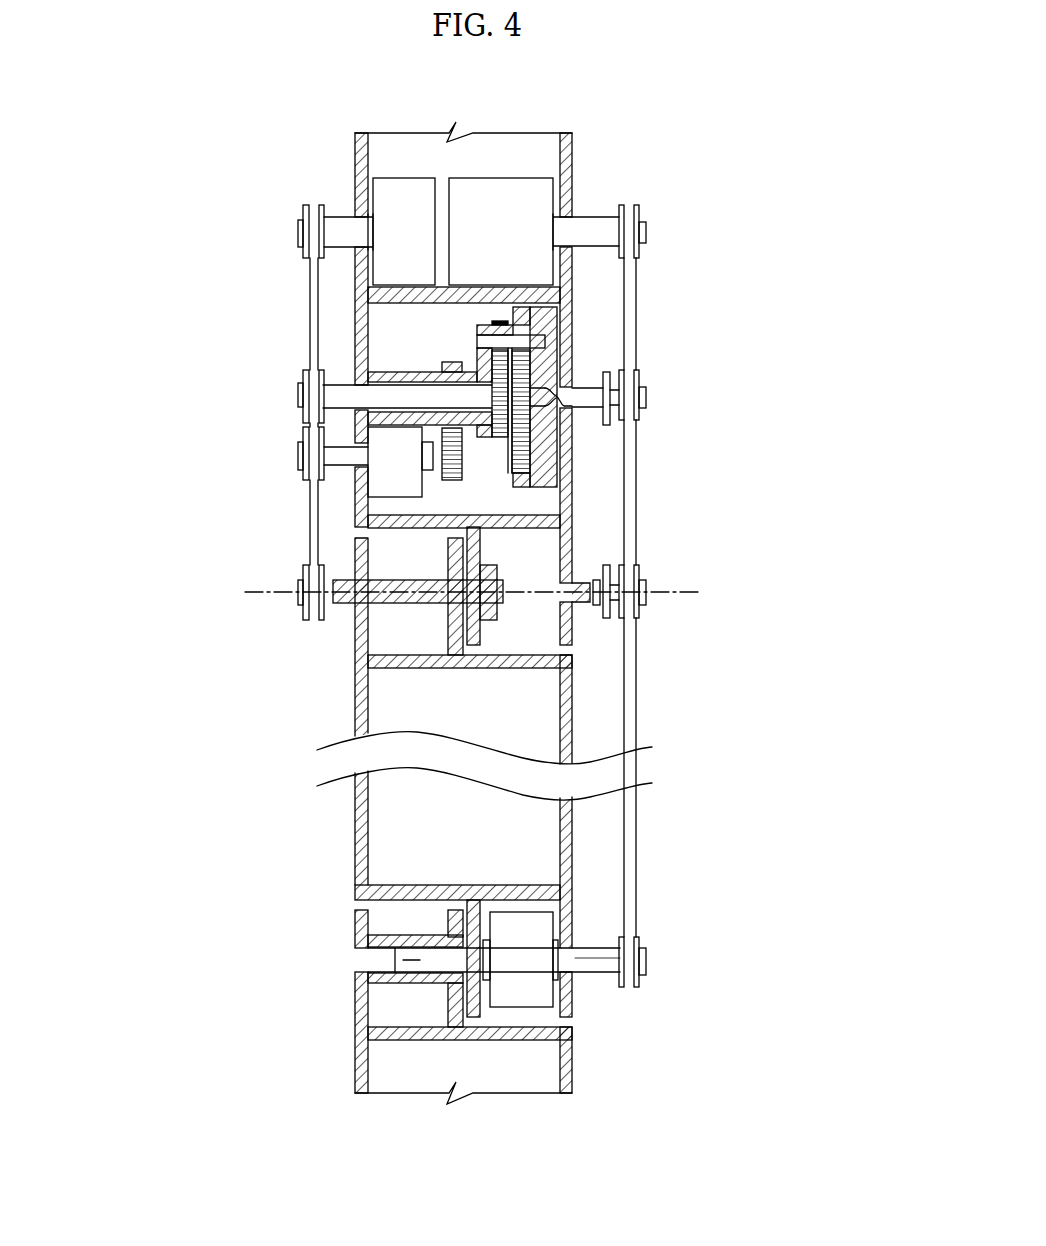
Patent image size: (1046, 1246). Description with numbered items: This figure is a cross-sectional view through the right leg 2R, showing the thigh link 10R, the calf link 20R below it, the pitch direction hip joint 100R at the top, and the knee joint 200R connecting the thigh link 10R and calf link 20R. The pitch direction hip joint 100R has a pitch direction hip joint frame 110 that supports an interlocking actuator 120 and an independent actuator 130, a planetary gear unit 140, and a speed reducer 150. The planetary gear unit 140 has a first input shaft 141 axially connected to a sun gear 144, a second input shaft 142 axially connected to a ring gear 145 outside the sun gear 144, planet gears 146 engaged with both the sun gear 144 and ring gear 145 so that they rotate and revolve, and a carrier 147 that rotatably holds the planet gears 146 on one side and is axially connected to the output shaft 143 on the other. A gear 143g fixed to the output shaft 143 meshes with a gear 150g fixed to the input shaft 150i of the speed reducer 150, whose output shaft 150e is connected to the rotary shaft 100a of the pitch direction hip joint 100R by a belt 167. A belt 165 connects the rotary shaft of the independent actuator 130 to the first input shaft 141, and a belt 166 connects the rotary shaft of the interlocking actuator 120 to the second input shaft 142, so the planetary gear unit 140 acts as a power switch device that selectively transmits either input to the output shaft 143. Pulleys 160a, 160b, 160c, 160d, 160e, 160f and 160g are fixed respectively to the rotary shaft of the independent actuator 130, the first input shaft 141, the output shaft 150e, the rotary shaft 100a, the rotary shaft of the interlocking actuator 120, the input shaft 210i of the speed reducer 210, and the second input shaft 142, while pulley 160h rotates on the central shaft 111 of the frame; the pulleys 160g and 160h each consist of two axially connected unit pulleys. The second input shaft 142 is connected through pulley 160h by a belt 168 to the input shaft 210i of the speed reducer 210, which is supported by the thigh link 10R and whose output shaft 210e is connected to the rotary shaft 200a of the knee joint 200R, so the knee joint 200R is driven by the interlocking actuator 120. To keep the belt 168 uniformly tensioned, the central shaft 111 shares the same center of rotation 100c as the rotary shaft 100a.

The right leg 2R is at (148, 461).
The thigh link 10R is at (362, 706).
The calf link 20R is at (362, 1028).
The pitch direction hip joint 100R is at (773, 361).
The rotary shaft of the pitch direction hip joint 100a is at (385, 602).
The center of rotation 100c is at (668, 590).
The pitch direction hip joint frame 110 is at (355, 158).
The central shaft 111 is at (590, 600).
The interlocking actuator 120 is at (511, 183).
The independent actuator 130 is at (404, 182).
The planetary gear unit 140 is at (500, 455).
The first input shaft 141 is at (353, 390).
The second input shaft 142 is at (583, 388).
The output shaft 143 is at (413, 372).
The gear 143g is at (443, 363).
The sun gear 144 is at (532, 447).
The ring gear 145 is at (540, 480).
The planet gears 146 is at (550, 322).
The carrier 147 is at (475, 335).
The speed reducer 150 is at (378, 453).
The input shaft of the speed reducer 150i is at (422, 442).
The output shaft of the speed reducer 150e is at (440, 470).
The gear 150g is at (340, 462).
The pulley 160a is at (305, 210).
The pulley 160b is at (305, 382).
The pulley 160c is at (305, 450).
The pulley 160d is at (305, 576).
The pulley 160e is at (640, 210).
The pulley 160f is at (645, 970).
The pulley 160g is at (640, 395).
The pulley 160h is at (640, 620).
The belt 165 is at (310, 265).
The belt 166 is at (628, 272).
The belt 167 is at (310, 550).
The belt 168 is at (625, 505).
The knee joint 200R is at (658, 933).
The rotary shaft of the knee joint 200a is at (388, 940).
The speed reducer 210 is at (550, 1012).
The output shaft of the speed reducer 210e is at (400, 960).
The input shaft of the speed reducer 210i is at (602, 974).